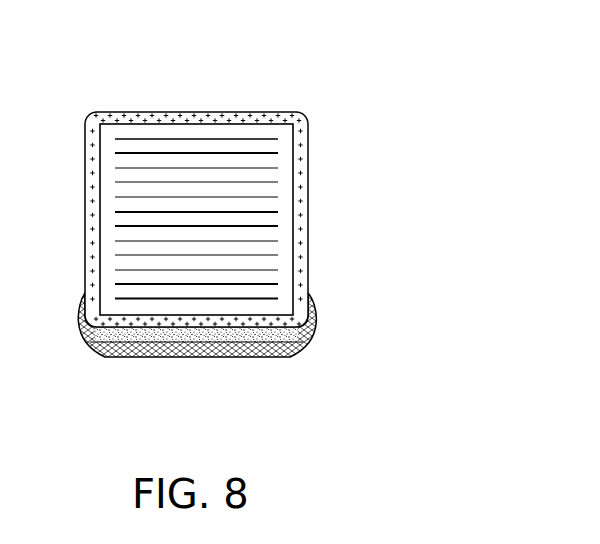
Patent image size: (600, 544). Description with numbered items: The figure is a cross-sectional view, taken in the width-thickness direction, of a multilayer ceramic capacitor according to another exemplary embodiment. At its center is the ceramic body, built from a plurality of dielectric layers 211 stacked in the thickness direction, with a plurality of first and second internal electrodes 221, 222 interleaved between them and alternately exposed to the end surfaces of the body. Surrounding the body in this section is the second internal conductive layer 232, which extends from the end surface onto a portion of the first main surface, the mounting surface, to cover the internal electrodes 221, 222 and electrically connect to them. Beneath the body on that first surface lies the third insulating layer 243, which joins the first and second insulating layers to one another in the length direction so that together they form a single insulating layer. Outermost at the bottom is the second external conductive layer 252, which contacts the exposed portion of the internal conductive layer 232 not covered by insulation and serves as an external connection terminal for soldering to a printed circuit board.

The dielectric layer 211 is at (285, 188).
The first internal electrode 221 is at (186, 139).
The second internal electrode 222 is at (258, 153).
The second internal conductive layer 232 is at (298, 250).
The third insulating layer 243 is at (180, 339).
The second external conductive layer 252 is at (232, 356).